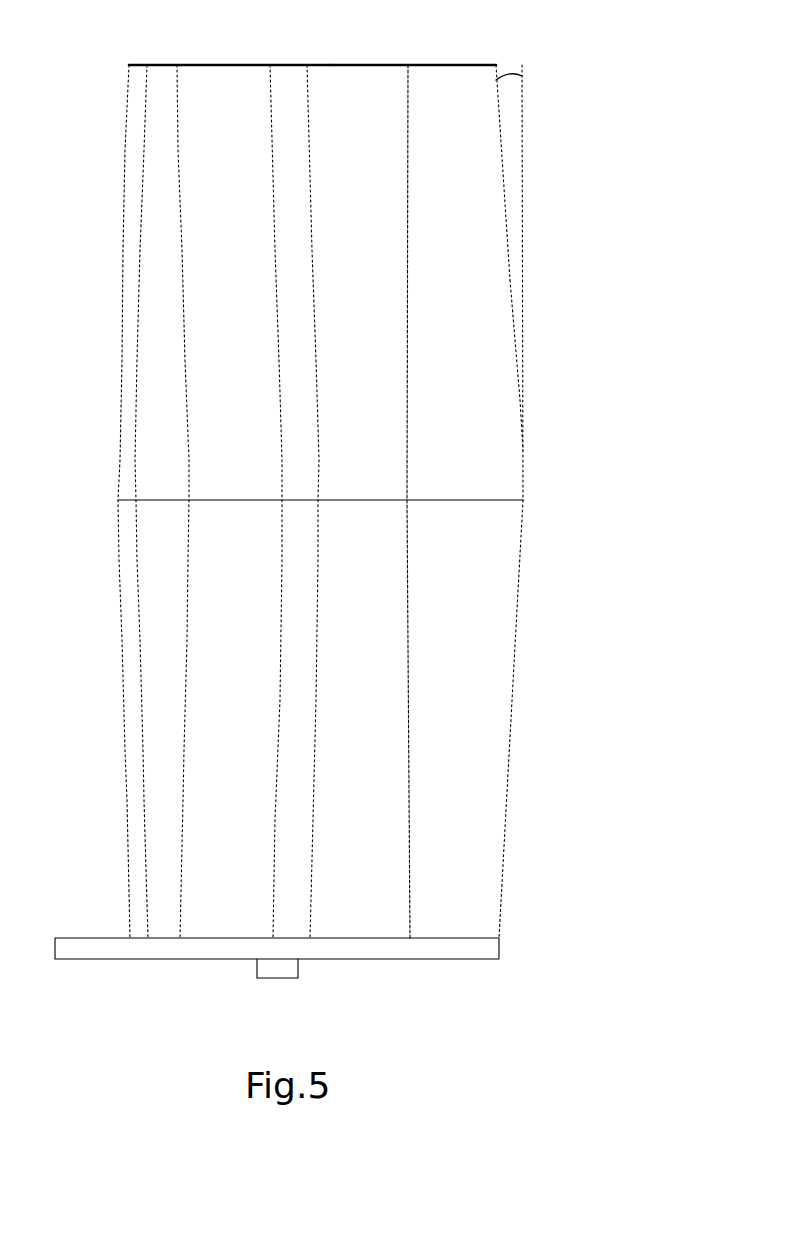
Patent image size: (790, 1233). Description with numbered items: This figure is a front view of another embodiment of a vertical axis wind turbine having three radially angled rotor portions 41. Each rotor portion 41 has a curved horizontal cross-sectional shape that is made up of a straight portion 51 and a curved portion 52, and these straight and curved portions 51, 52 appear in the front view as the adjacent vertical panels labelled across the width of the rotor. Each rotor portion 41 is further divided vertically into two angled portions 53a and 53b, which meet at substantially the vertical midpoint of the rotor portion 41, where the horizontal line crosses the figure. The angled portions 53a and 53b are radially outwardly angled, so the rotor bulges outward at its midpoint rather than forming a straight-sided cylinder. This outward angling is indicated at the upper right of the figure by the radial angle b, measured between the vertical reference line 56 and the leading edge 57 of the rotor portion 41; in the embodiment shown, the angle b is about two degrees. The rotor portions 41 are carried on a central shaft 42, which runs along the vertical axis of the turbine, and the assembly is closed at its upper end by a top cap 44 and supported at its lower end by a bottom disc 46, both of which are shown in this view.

The rotor portion 41 is at (104, 352).
The central shaft 42 is at (272, 59).
The top cap 44 is at (381, 62).
The radial angle b is at (509, 90).
The leading edge 57 is at (499, 137).
The vertical reference line 56 is at (523, 127).
The angled portion 53a is at (495, 330).
The angled portion 53b is at (487, 650).
The straight portion 51 is at (176, 313).
The curved portion 52 is at (146, 286).
The bottom disc 46 is at (492, 950).